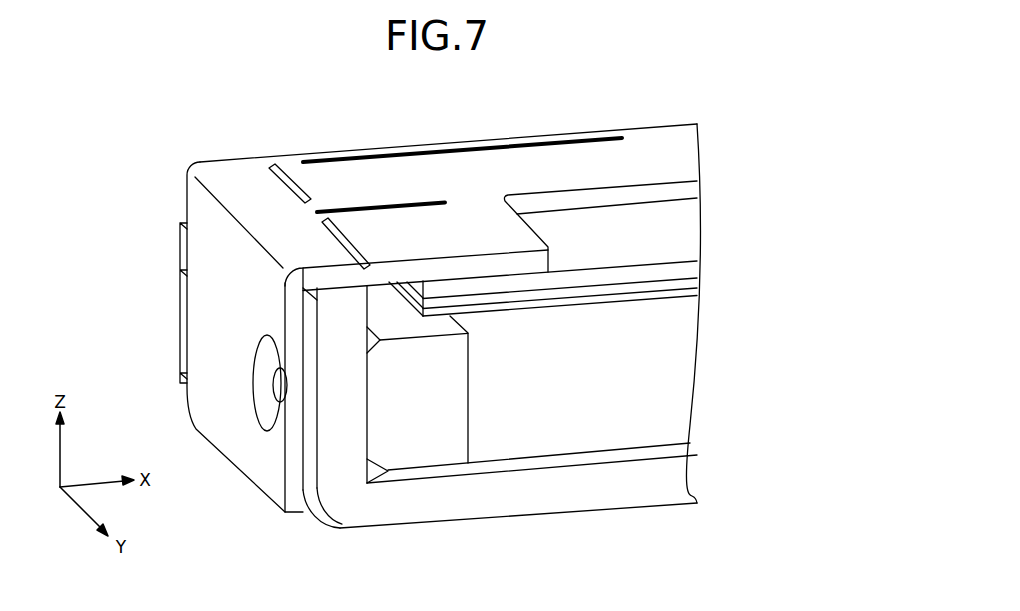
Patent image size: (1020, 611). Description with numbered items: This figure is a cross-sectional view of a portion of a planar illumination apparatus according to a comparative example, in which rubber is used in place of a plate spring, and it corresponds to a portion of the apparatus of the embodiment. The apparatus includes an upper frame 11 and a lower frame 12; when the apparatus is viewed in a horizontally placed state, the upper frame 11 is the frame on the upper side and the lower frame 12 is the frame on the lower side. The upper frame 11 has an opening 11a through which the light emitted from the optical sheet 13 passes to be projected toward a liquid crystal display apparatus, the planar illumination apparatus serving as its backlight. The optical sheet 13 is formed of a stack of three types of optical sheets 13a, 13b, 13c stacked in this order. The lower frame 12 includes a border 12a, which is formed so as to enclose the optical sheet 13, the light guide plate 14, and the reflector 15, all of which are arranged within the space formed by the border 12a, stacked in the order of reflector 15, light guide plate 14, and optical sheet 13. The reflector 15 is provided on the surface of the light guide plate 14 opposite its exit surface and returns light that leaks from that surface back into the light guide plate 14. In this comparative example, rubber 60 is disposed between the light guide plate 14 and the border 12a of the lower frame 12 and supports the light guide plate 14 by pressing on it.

The upper frame 11 is at (236, 178).
The opening 11a is at (584, 245).
The lower frame 12 is at (400, 510).
The border 12a is at (337, 447).
The optical sheet 13 is at (568, 282).
The optical sheet 13a is at (693, 270).
The optical sheet 13b is at (693, 283).
The optical sheet 13c is at (585, 302).
The light guide plate 14 is at (673, 372).
The reflector 15 is at (677, 452).
The rubber 60 is at (447, 447).